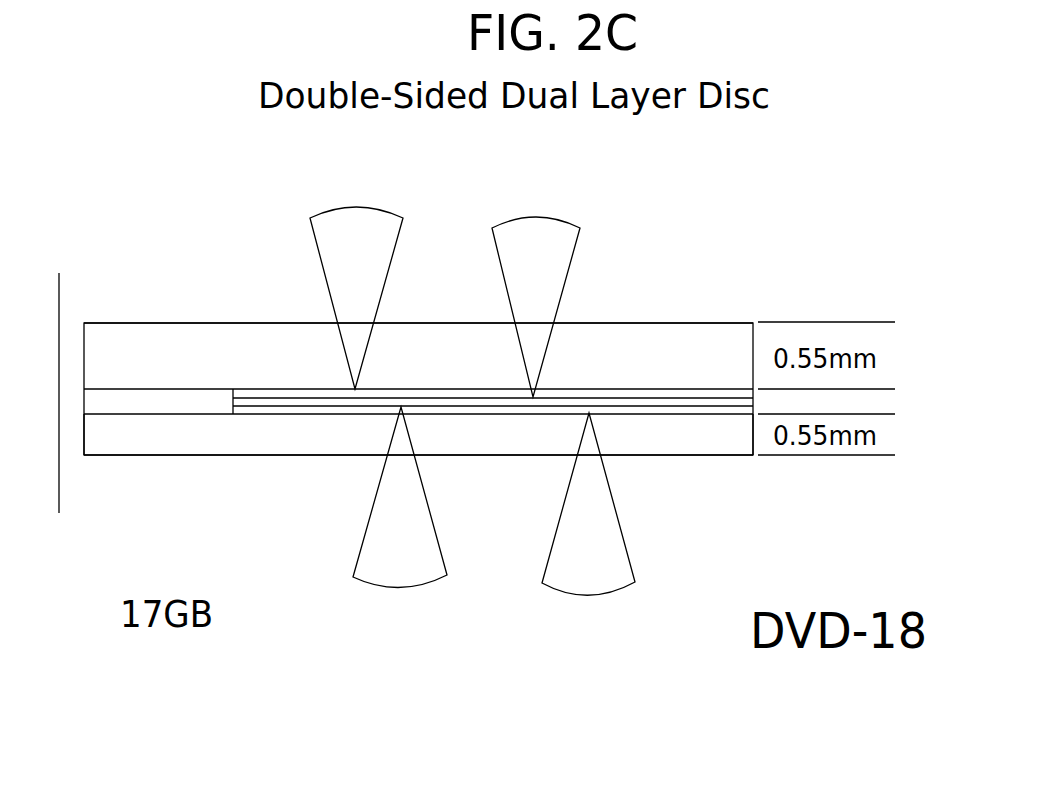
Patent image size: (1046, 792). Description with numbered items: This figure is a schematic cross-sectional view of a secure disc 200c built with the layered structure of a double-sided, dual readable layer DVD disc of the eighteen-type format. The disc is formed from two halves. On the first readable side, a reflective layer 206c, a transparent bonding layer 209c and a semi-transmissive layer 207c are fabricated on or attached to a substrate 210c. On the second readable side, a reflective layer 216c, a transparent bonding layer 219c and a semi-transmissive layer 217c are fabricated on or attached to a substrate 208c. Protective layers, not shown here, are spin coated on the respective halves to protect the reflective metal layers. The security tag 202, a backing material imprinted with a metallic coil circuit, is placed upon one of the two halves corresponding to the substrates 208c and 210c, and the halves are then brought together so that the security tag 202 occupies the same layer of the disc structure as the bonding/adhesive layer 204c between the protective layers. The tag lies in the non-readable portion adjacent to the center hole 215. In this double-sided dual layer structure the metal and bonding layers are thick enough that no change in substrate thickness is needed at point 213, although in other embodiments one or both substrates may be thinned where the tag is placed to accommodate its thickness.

The secure disc 200c is at (405, 316).
The security tag 202 is at (103, 395).
The substrate 208c is at (238, 363).
The bonding/adhesive layer 204c is at (480, 403).
The semi-transmissive layer 217c is at (572, 389).
The reflective layer 216c is at (665, 396).
The transparent bonding layer 219c is at (710, 392).
The point 213 is at (240, 430).
The center hole 215 is at (69, 448).
The semi-transmissive layer 207c is at (365, 415).
The transparent bonding layer 209c is at (503, 410).
The reflective layer 206c is at (638, 408).
The substrate 210c is at (720, 448).